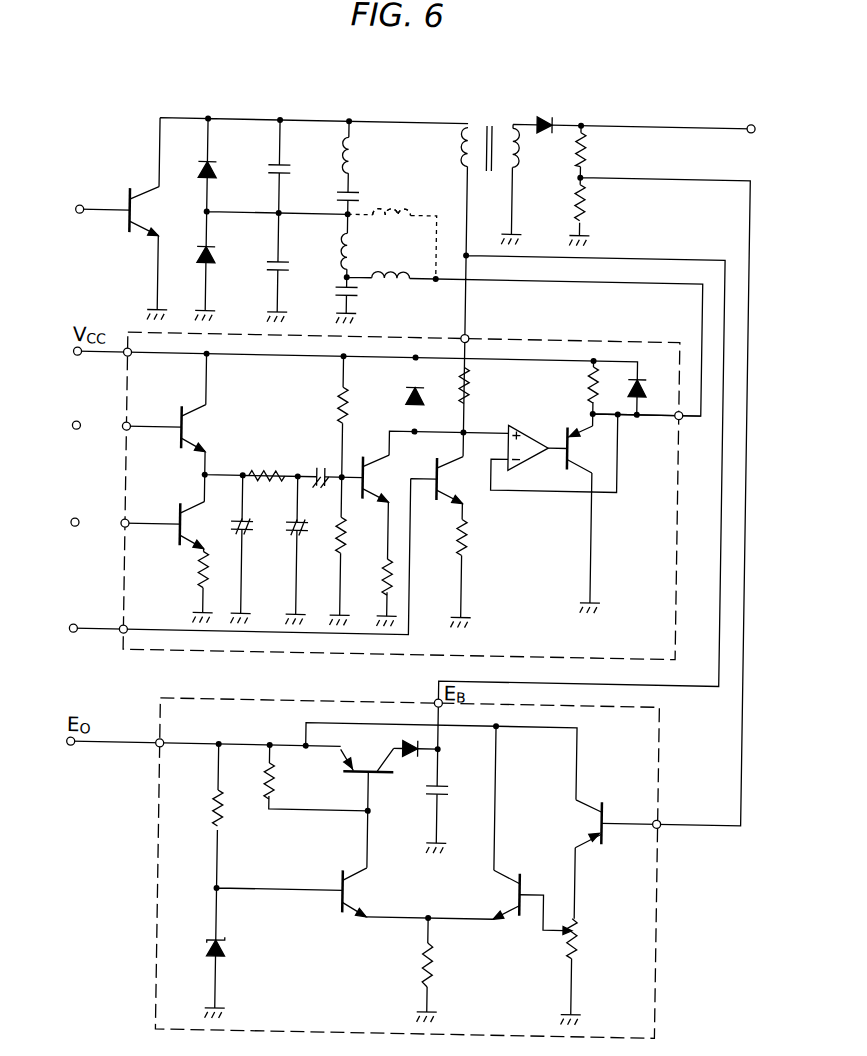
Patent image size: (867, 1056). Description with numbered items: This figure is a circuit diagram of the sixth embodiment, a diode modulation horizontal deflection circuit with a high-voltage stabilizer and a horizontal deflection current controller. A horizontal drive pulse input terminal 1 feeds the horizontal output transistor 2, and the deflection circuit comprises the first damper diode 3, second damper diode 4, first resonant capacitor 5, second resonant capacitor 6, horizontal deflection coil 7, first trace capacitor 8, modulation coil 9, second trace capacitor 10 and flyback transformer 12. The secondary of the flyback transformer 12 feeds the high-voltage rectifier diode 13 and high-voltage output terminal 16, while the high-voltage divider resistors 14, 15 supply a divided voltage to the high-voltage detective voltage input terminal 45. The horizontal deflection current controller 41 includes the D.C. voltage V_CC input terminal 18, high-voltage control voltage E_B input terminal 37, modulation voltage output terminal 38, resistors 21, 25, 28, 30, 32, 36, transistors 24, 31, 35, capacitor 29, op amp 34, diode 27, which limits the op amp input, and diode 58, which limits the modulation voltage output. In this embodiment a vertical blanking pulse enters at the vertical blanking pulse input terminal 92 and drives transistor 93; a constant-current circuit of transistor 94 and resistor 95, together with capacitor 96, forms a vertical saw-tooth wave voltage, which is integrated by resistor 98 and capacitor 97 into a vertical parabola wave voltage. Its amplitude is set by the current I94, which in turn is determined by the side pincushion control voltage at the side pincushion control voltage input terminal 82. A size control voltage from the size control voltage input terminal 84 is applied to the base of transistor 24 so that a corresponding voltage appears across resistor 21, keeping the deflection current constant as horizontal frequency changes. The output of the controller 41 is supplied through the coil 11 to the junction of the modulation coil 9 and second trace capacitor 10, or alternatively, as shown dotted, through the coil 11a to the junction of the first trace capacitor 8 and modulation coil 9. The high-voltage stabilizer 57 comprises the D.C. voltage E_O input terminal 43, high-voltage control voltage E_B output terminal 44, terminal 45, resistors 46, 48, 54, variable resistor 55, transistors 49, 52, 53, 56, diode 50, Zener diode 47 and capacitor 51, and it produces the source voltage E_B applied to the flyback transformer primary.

The horizontal drive pulse input terminal 1 is at (78, 222).
The horizontal output transistor 2 is at (138, 238).
The first damper diode 3 is at (198, 170).
The second damper diode 4 is at (199, 270).
The first resonant capacitor 5 is at (269, 168).
The second resonant capacitor 6 is at (262, 278).
The horizontal deflection coil 7 is at (350, 152).
The first trace capacitor 8 is at (330, 194).
The modulation coil 9 is at (350, 242).
The second trace capacitor 10 is at (355, 297).
The coil 11 is at (400, 283).
The coil 11a is at (406, 210).
The flyback transformer 12 is at (486, 120).
The high-voltage rectifier diode 13 is at (540, 114).
The high-voltage divider resistor 14 is at (580, 150).
The high-voltage divider resistor 15 is at (580, 204).
The high-voltage output terminal 16 is at (745, 118).
The D.C. voltage V_CC input terminal 18 is at (122, 362).
The resistor 21 is at (468, 384).
The transistor 24 is at (462, 480).
The resistor 25 is at (468, 532).
The diode 27 is at (418, 386).
The resistor 28 is at (346, 402).
The capacitor 29 is at (317, 468).
The resistor 30 is at (336, 534).
The transistor 31 is at (378, 498).
The resistor 32 is at (385, 562).
The op amp 34 is at (518, 424).
The transistor 35 is at (582, 450).
The resistor 36 is at (586, 384).
The high-voltage control voltage E_B input terminal 37 is at (466, 336).
The modulation voltage output terminal 38 is at (679, 416).
The horizontal deflection current controller 41 is at (148, 655).
The D.C. voltage E_O input terminal 43 is at (160, 752).
The high-voltage control voltage E_B output terminal 44 is at (436, 702).
The high-voltage detective voltage input terminal 45 is at (664, 816).
The resistor 46 is at (217, 804).
The Zener diode 47 is at (228, 952).
The resistor 48 is at (269, 780).
The transistor 49 is at (378, 776).
The diode 50 is at (404, 745).
The capacitor 51 is at (446, 784).
The transistor 52 is at (358, 890).
The transistor 53 is at (514, 890).
The resistor 54 is at (440, 956).
The variable resistor 55 is at (584, 932).
The transistor 56 is at (594, 812).
The high-voltage stabilizer 57 is at (163, 920).
The diode 58 is at (641, 382).
The side pincushion control voltage input terminal 82 is at (122, 533).
The size control voltage input terminal 84 is at (122, 639).
The vertical blanking pulse input terminal 92 is at (122, 436).
The transistor 93 is at (200, 424).
The transistor 94 is at (178, 538).
The resistor 95 is at (200, 580).
The capacitor 96 is at (236, 540).
The capacitor 97 is at (290, 540).
The resistor 98 is at (267, 472).
The current I_94 I94 is at (217, 535).